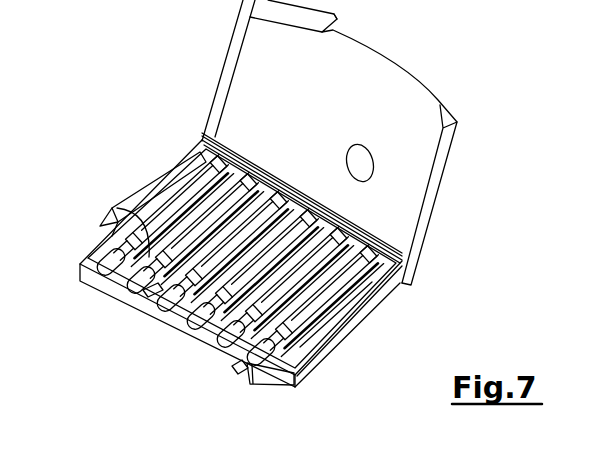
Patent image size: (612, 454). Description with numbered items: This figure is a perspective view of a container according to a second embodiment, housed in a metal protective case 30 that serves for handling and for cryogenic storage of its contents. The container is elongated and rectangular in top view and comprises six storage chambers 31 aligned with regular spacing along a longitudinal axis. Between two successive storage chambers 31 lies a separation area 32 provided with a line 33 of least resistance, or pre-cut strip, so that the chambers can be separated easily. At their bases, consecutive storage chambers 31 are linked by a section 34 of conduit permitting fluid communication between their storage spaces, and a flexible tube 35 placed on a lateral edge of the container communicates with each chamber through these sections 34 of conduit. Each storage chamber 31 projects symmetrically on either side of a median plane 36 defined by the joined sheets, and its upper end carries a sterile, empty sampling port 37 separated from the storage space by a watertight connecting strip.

The metal protective case 30 is at (294, 382).
The storage chamber 31 is at (170, 200).
The separation area 32 is at (150, 292).
The line of least resistance 33 is at (117, 208).
The section of conduit 34 is at (203, 138).
The flexible tube 35 is at (363, 298).
The median plane 36 is at (300, 347).
The sampling port 37 is at (253, 365).